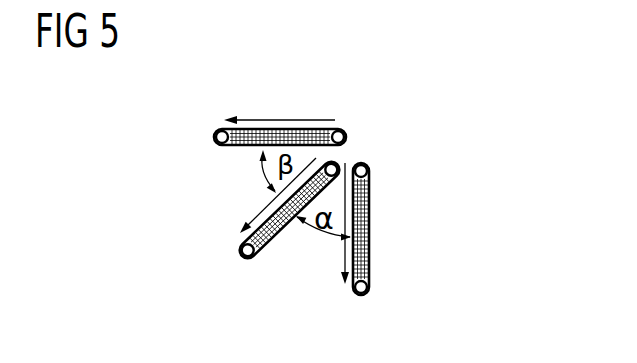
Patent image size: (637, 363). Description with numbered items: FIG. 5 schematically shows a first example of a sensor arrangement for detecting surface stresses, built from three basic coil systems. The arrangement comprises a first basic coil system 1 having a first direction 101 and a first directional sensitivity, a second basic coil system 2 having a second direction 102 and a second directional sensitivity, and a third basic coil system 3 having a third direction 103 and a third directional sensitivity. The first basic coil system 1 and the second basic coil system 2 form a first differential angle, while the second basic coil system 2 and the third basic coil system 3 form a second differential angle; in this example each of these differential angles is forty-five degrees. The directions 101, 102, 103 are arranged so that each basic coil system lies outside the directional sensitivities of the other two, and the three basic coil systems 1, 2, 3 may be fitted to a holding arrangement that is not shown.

The first basic coil system 1 is at (367, 229).
The second basic coil system 2 is at (270, 241).
The third basic coil system 3 is at (311, 136).
The first direction 101 is at (340, 251).
The second direction 102 is at (267, 221).
The third direction 103 is at (267, 119).